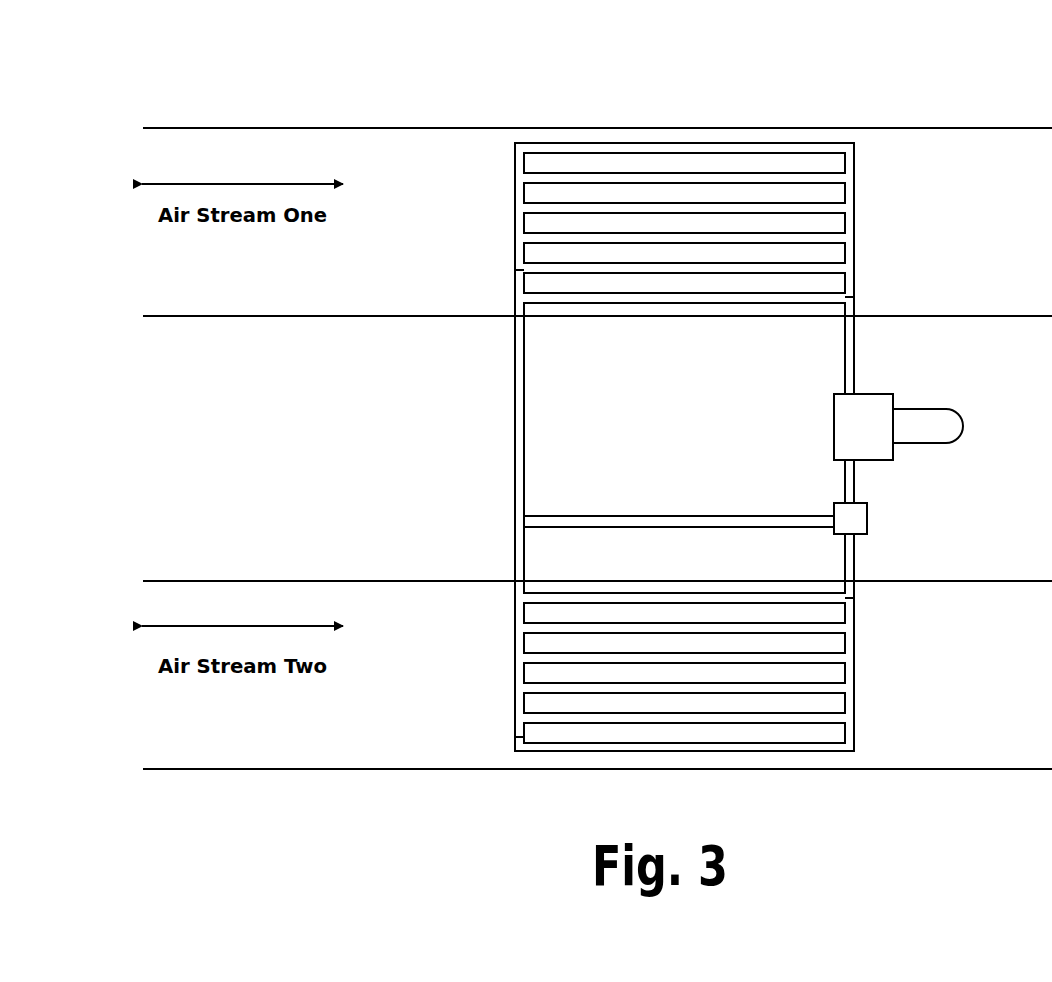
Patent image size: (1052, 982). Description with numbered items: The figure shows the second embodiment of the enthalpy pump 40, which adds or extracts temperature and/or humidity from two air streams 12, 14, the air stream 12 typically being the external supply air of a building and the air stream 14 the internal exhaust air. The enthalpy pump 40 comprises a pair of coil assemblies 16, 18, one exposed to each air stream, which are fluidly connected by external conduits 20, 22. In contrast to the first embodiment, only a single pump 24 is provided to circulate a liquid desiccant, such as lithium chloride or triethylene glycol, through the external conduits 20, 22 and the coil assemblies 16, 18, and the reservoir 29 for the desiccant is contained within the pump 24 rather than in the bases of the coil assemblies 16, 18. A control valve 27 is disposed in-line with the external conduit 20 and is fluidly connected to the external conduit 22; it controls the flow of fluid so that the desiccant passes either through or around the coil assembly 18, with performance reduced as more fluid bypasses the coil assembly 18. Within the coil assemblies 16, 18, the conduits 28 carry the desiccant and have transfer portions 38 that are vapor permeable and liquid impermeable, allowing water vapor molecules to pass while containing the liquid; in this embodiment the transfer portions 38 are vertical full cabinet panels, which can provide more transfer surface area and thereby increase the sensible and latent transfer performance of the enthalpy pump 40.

The air stream 12 is at (283, 128).
The air stream 14 is at (297, 581).
The coil assembly 16 is at (513, 217).
The coil assembly 18 is at (513, 678).
The external conduit 20 is at (855, 351).
The external conduit 22 is at (520, 353).
The pump 24 is at (928, 408).
The control valve 27 is at (867, 517).
The conduits 28 is at (513, 270).
The reservoir 29 is at (833, 413).
The transfer portion 38 is at (828, 295).
The enthalpy pump 40 is at (684, 407).